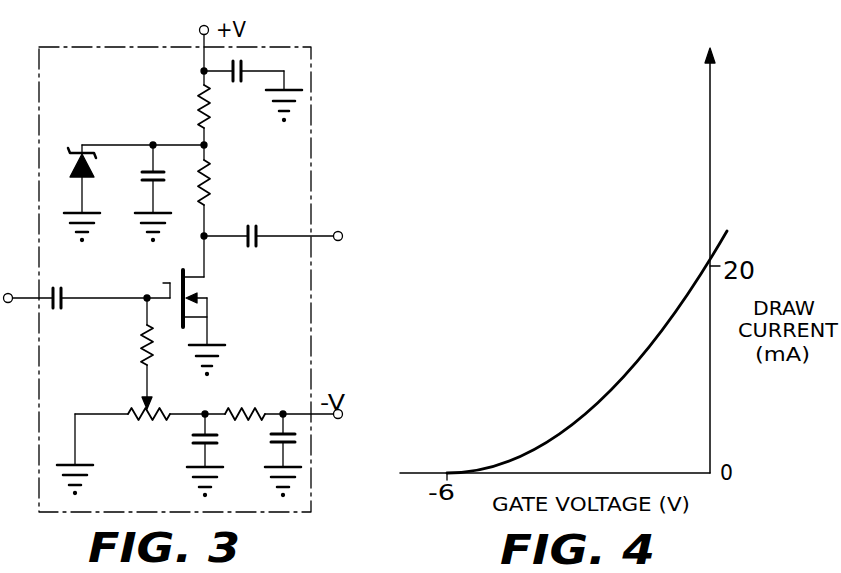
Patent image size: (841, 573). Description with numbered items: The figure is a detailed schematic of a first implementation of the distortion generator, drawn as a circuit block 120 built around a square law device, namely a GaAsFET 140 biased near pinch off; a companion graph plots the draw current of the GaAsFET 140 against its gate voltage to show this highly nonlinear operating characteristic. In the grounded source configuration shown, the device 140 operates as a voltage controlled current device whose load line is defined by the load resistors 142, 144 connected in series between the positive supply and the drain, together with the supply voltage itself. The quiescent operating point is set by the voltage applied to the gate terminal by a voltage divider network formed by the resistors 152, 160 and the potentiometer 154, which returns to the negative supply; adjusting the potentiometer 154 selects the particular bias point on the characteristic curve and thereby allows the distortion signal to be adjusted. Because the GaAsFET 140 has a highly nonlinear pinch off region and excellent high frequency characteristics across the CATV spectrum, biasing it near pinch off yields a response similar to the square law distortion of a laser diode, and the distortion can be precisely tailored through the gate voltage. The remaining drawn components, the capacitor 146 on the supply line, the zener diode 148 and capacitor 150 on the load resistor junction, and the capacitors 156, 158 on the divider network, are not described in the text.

The bias control circuit 120 is at (125, 47).
The GaAsFET 140 is at (181, 276).
The load resistor 142 is at (200, 105).
The load resistor 144 is at (207, 170).
The capacitor 146 is at (243, 82).
The zener diode 148 is at (97, 158).
The capacitor 150 is at (143, 173).
The resistor 152 is at (145, 340).
The potentiometer 154 is at (158, 422).
The capacitor 156 is at (193, 447).
The capacitor 158 is at (272, 446).
The resistor 160 is at (232, 384).